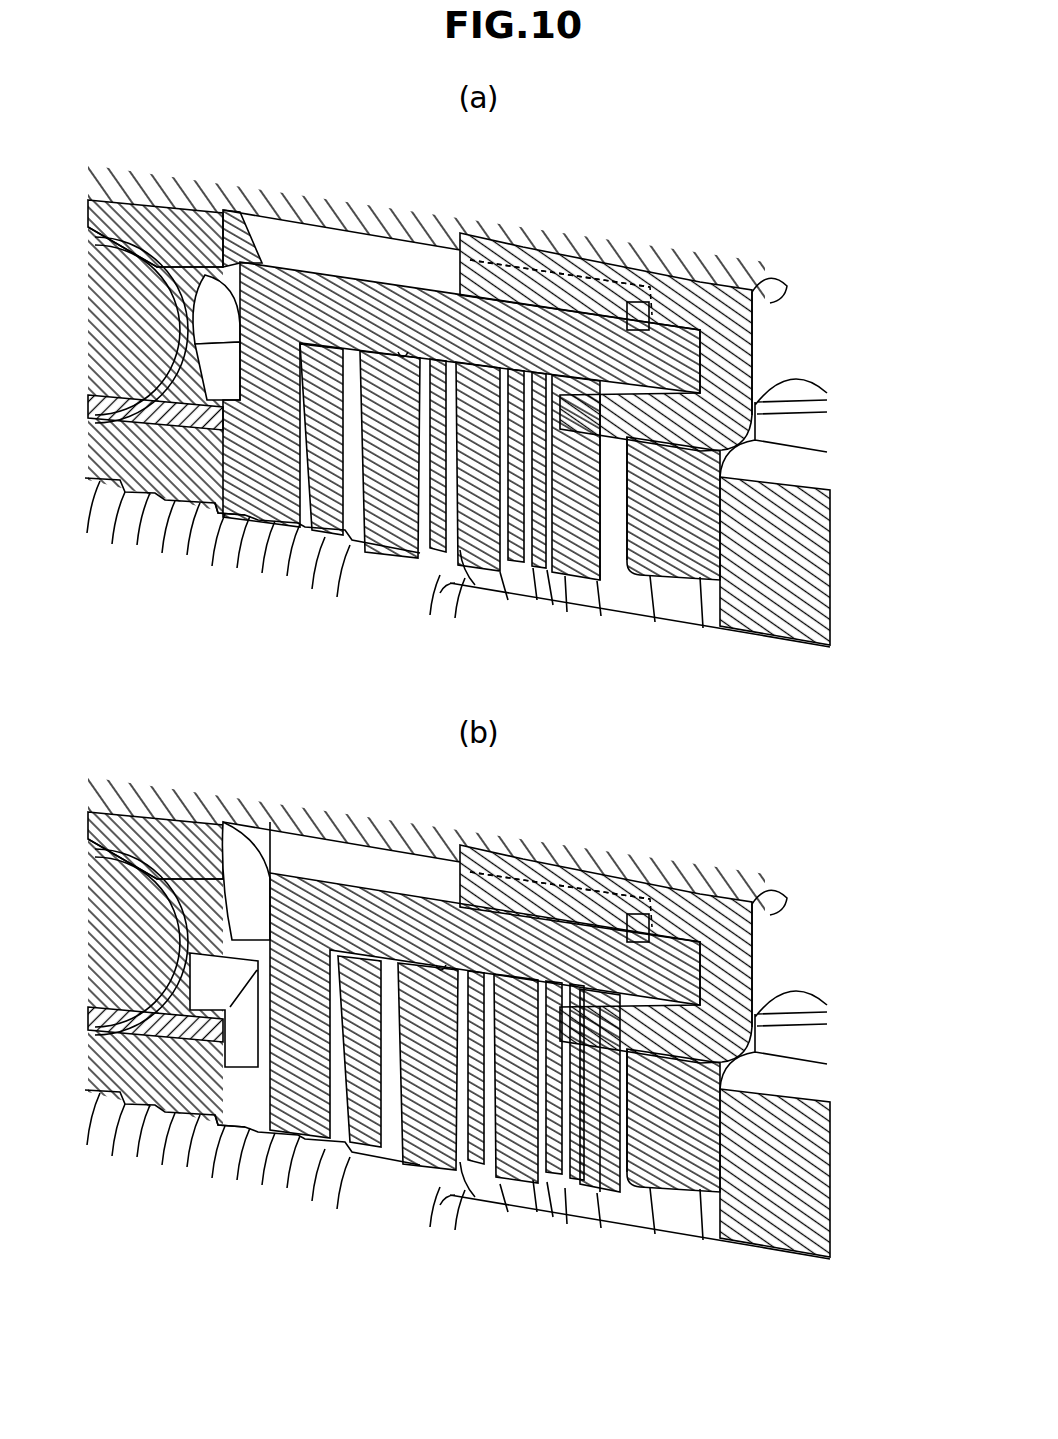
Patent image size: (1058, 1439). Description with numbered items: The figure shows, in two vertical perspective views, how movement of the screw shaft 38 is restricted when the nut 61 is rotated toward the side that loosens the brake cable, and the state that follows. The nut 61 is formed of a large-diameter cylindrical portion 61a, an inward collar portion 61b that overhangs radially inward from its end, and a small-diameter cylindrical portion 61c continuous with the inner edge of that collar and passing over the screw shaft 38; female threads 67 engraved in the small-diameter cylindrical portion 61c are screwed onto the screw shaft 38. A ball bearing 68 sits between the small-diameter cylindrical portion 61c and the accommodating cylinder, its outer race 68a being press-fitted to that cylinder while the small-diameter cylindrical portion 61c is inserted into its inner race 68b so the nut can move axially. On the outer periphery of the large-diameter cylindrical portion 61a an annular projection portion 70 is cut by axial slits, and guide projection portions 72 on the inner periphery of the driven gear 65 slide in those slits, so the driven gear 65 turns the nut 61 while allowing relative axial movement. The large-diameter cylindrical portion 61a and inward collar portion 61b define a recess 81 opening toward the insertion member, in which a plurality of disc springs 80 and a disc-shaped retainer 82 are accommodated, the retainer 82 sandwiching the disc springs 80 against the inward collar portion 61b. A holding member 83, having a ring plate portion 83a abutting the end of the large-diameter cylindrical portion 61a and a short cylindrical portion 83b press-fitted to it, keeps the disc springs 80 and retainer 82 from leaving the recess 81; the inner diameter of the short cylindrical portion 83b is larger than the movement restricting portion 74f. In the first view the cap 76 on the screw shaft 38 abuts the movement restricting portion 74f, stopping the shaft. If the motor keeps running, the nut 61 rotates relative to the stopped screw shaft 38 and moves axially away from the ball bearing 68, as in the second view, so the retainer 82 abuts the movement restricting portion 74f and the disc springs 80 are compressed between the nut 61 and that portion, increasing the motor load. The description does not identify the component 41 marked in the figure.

The screw shaft 38 is at (762, 648).
The gap 41 is at (246, 230).
The nut 61 is at (321, 248).
The large-diameter cylindrical portion 61a is at (390, 262).
The inward collar portion 61b is at (212, 320).
The small-diameter cylindrical portion 61c is at (118, 488).
The driven gear 65 is at (684, 262).
The female threads 67 is at (215, 512).
The ball bearing 68 is at (95, 335).
The outer race 68a is at (106, 208).
The inner race 68b is at (90, 478).
The annular projection portion 70 is at (548, 272).
The guide projection portions 72 is at (705, 350).
The movement restricting portion 74f is at (688, 573).
The cap 76 is at (818, 652).
The disc springs 80 is at (300, 540).
The recess 81 is at (410, 352).
The retainer 82 is at (572, 575).
The holding member 83 is at (776, 382).
The ring plate portion 83a is at (740, 298).
The short cylindrical portion 83b is at (626, 550).